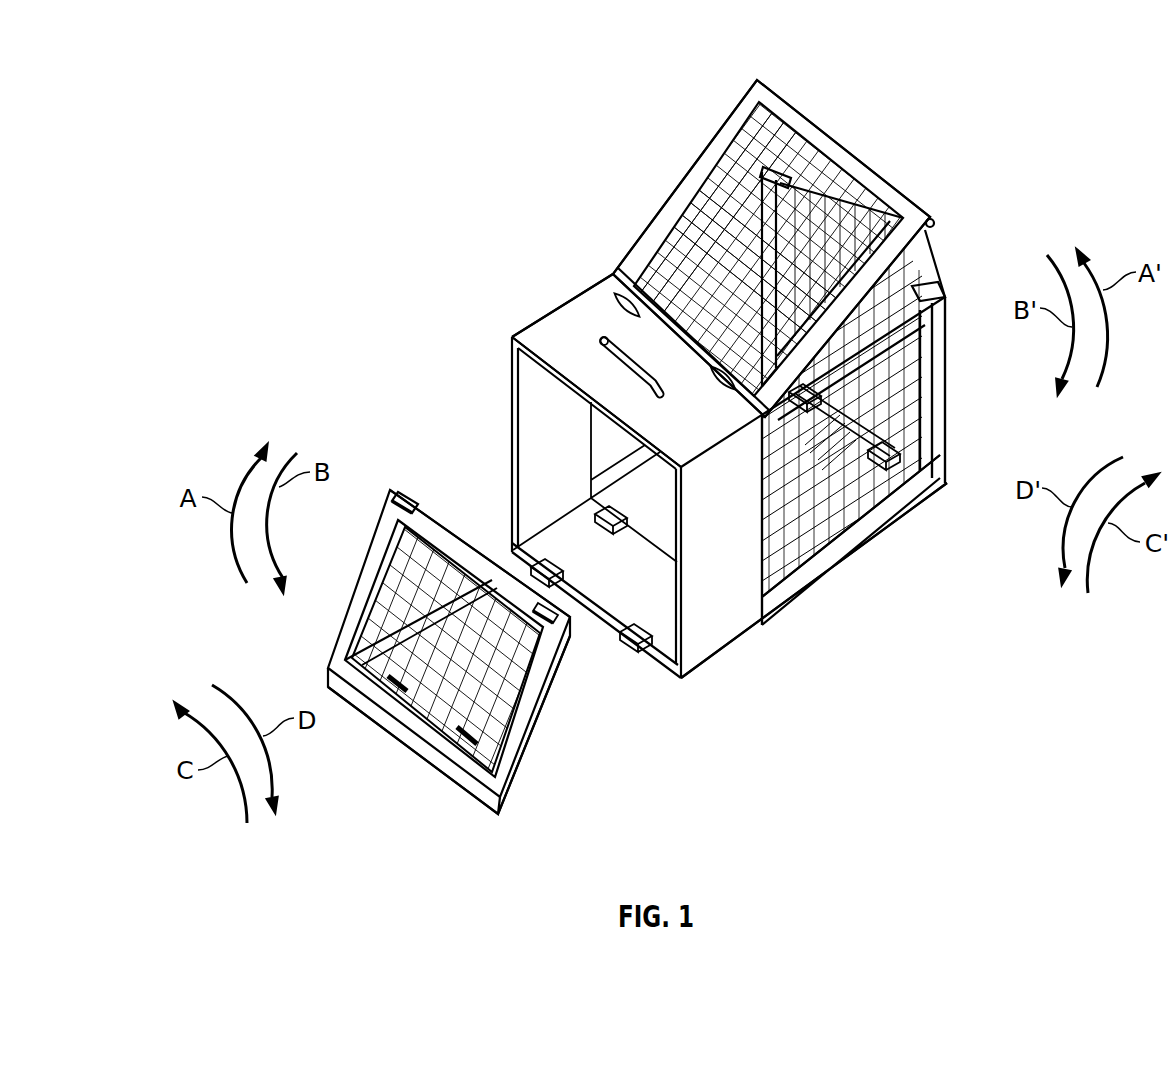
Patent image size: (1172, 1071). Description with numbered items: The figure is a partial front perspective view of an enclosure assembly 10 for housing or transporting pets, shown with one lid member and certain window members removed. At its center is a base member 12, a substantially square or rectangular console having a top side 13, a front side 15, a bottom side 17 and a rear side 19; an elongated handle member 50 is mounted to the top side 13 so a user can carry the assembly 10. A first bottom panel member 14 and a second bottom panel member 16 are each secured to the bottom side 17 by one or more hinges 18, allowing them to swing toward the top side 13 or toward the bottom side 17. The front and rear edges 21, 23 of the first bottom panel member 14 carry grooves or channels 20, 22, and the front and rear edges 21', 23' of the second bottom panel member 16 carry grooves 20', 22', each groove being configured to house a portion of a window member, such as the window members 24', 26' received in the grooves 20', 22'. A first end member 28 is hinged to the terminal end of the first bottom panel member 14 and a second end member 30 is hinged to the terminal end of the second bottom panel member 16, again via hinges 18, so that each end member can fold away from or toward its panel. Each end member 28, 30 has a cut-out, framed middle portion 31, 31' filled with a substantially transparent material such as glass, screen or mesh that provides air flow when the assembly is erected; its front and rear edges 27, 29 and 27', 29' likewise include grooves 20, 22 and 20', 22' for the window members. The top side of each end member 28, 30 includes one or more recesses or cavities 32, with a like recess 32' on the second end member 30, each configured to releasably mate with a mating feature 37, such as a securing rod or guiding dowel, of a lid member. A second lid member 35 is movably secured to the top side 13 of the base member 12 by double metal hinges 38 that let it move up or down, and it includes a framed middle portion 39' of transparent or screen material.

The enclosure assembly 10 is at (243, 113).
The base member 12 is at (488, 292).
The top side 13 is at (536, 331).
The first bottom panel member 14 is at (528, 799).
The front side 15 is at (742, 627).
The second bottom panel member 16 is at (892, 535).
The bottom side 17 is at (684, 663).
The hinges 18 is at (790, 402).
The rear side 19 is at (527, 455).
The groove 20 is at (485, 667).
The groove 20' is at (880, 431).
The front edge 21 is at (463, 744).
The front edge 21' is at (853, 487).
The groove 22 is at (424, 628).
The groove 22' is at (692, 265).
The rear edge 23 is at (418, 541).
The rear edge 23' is at (744, 269).
The window member 24' is at (867, 453).
The window member 26' is at (690, 263).
The front edge 27 is at (485, 648).
The front edge 27' is at (885, 475).
The first end member 28 is at (376, 590).
The rear edge 29 is at (436, 553).
The rear edge 29' is at (726, 253).
The second end member 30 is at (848, 228).
The middle portion 31 is at (398, 626).
The middle portion 31' is at (898, 261).
The recess 32 is at (683, 403).
The lid mesh 32' is at (772, 248).
The second lid member 35 is at (722, 138).
The mating feature 37 is at (748, 112).
The double metal hinges 38 is at (621, 300).
The middle portion 39' is at (750, 203).
The handle member 50 is at (604, 337).